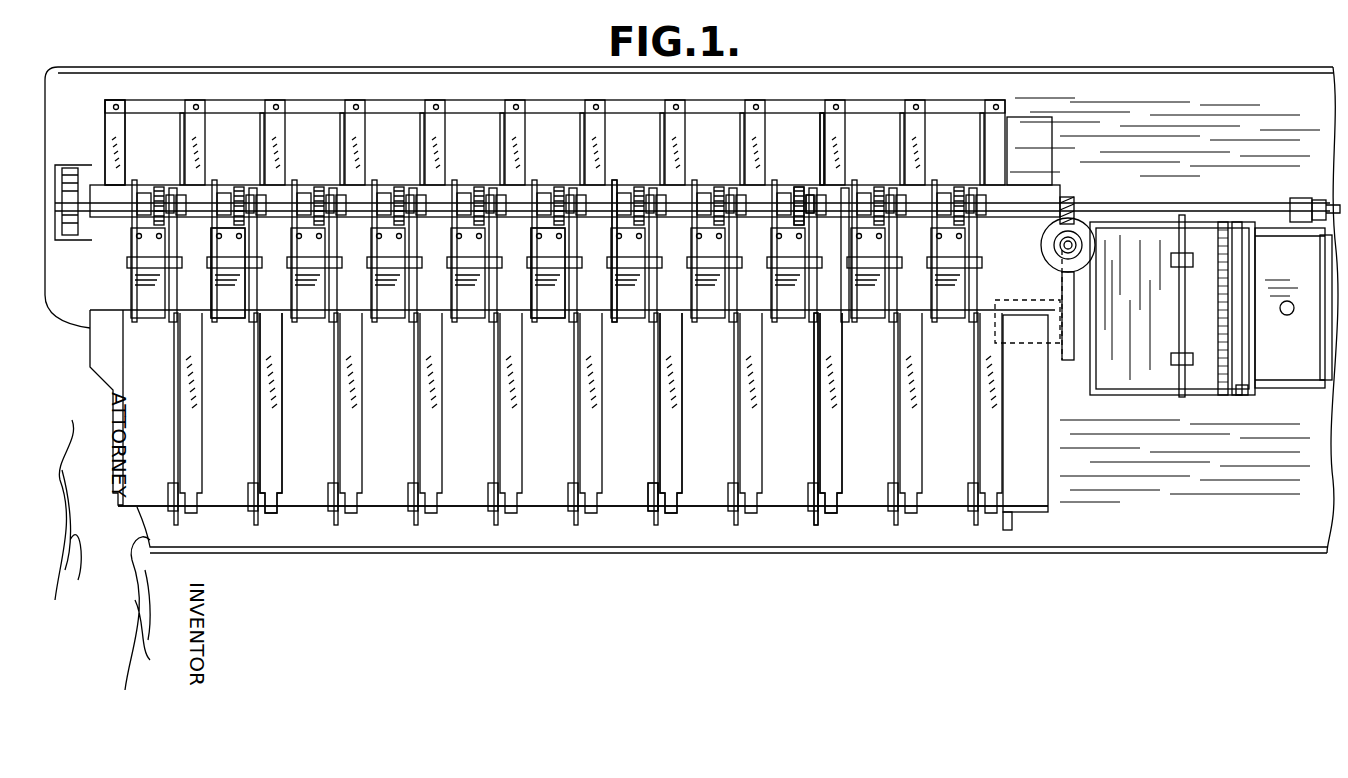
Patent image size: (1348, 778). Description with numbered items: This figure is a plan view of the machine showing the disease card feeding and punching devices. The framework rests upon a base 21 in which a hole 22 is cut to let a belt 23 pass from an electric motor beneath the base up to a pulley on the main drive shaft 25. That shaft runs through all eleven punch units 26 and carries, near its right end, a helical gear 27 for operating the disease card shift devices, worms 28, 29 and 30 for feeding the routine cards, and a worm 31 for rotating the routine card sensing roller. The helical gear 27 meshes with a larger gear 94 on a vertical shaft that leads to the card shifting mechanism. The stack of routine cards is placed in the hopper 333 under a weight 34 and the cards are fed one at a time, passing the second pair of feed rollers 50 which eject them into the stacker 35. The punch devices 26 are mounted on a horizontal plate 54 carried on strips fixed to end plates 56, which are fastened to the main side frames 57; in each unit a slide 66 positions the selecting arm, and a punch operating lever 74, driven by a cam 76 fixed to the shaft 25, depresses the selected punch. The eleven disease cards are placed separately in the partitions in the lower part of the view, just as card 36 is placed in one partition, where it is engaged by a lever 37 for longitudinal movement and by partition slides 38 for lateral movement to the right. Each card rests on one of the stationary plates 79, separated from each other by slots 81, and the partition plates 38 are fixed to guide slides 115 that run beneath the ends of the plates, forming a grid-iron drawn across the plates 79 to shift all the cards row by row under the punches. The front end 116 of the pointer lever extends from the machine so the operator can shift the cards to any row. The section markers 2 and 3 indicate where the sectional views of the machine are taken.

The base 21 is at (197, 68).
The main side frames 57 is at (100, 112).
The guide slides 115 is at (340, 103).
The slots 81 is at (818, 140).
The belt 23 is at (70, 168).
The hole 22 is at (80, 240).
The main drive shaft 25 is at (104, 203).
The horizontal plate 54 is at (626, 184).
The slide 66 is at (796, 192).
The cam 76 is at (812, 197).
The larger gear 94 is at (1050, 238).
The helical gear 27 is at (1073, 200).
The worm 28 is at (1182, 215).
The worm 31 is at (1223, 216).
The worm 29 is at (1240, 212).
The worm 30 is at (1305, 193).
The punch units 26 is at (232, 287).
The punch operating lever 74 is at (812, 288).
The section line 2 is at (917, 320).
The partition slides 38 is at (274, 427).
The lever 37 is at (817, 435).
The card 36 is at (702, 490).
The stationary plates 79 is at (778, 507).
The front end of lever 116 is at (1003, 528).
The end plates 56 is at (1025, 497).
The stacker 35 is at (1136, 384).
The second pair of feed rollers 50 is at (1183, 370).
The hopper 333 is at (1245, 385).
The weight 34 is at (1305, 376).
The section line 3 is at (1003, 56).